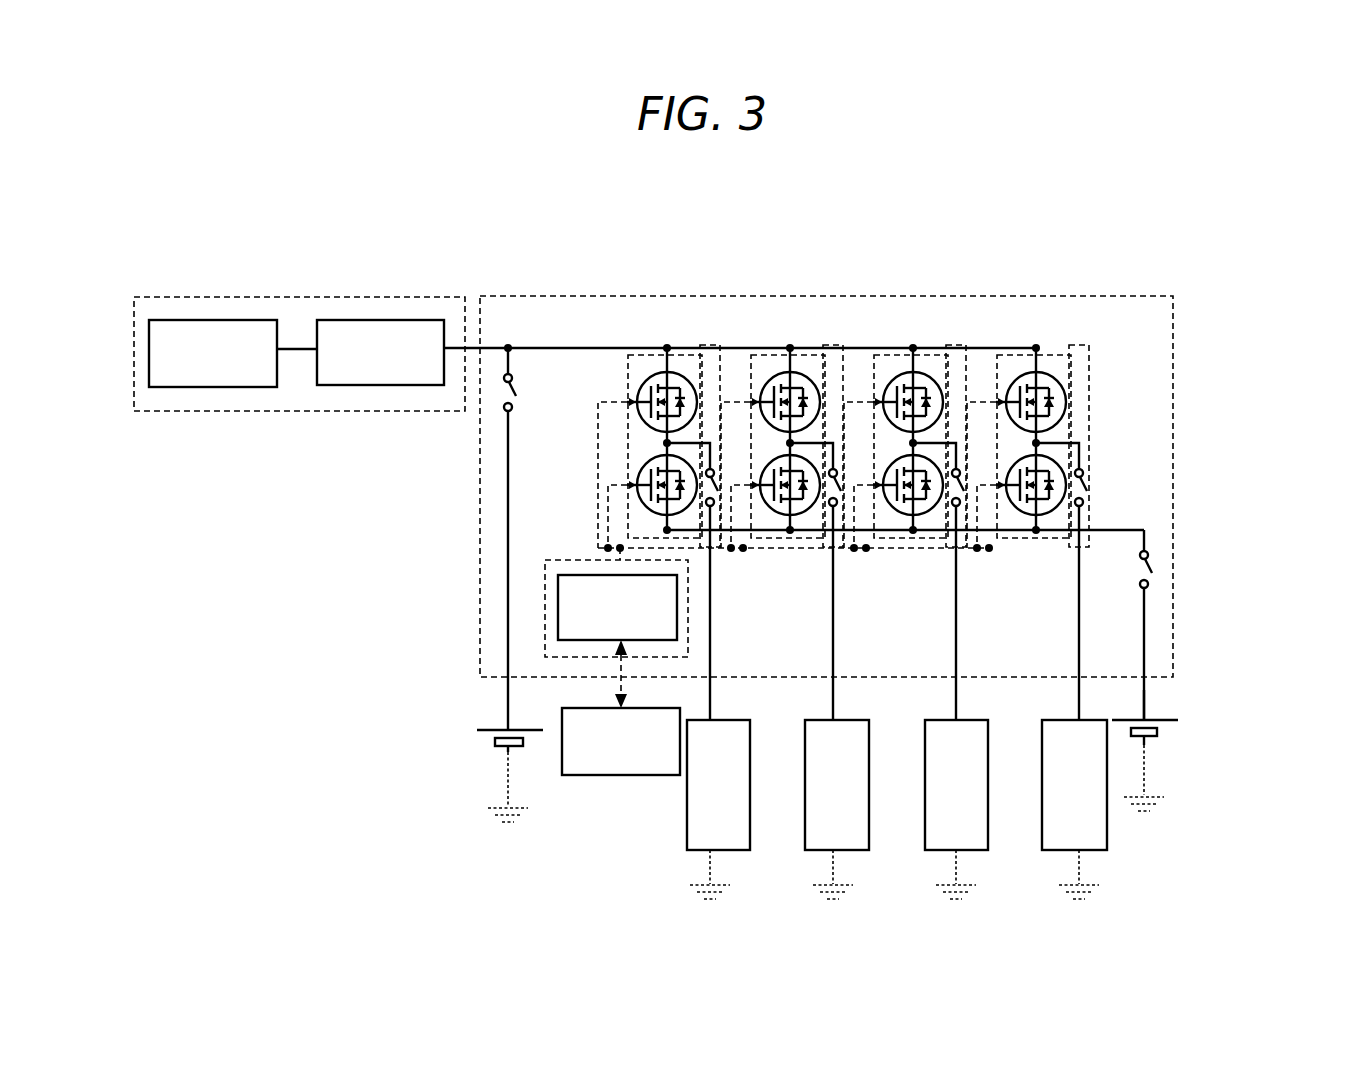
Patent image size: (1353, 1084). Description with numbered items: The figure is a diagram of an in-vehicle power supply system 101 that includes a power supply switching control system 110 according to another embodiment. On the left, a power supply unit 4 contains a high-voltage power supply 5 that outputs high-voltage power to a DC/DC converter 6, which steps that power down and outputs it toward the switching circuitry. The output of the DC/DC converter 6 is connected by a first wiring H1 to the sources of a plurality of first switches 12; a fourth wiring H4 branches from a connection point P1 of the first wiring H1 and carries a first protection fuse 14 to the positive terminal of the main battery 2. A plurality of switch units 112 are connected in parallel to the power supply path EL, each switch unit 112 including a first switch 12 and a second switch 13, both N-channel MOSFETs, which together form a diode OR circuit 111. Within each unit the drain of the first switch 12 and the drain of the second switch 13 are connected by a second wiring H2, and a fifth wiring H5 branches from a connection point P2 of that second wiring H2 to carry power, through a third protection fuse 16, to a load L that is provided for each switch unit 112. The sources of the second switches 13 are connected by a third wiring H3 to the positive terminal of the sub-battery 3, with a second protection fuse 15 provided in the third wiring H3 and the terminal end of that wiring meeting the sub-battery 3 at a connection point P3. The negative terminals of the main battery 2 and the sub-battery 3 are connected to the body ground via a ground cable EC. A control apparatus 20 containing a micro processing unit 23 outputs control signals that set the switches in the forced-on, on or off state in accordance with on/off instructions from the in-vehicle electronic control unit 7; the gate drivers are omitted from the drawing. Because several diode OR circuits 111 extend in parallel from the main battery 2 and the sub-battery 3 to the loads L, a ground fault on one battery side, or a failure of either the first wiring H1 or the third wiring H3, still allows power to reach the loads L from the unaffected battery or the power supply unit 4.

The in-vehicle power supply system 101 is at (1013, 215).
The power supply unit 4 is at (258, 297).
The power supply 5 is at (200, 320).
The DC/DC converter 6 is at (380, 318).
The first wiring H1 is at (600, 348).
The power supply path EL is at (1075, 325).
The connection point P1 is at (505, 345).
The first protection fuse 14 is at (505, 393).
The fourth wiring H4 is at (508, 610).
The main battery 2 is at (487, 740).
The ground cable EC is at (503, 768).
The power supply switching control system 110 is at (891, 362).
The diode OR circuit 111 is at (889, 377).
The switch unit 112 is at (952, 397).
The first switch 12 is at (1114, 378).
The second switch 13 is at (1114, 452).
The third protection fuse 16 is at (1137, 451).
The second wiring H2 is at (667, 443).
The connection point P2 is at (1060, 442).
The third wiring H3 is at (1146, 608).
The second protection fuse 15 is at (1150, 573).
The connection point P3 is at (1147, 718).
The sub-battery 3 is at (1167, 730).
The control apparatus 20 is at (541, 630).
The micro processing unit 23 is at (557, 626).
The in-vehicle electronic control unit 7 is at (620, 777).
The fifth wiring H5 is at (833, 688).
The load L is at (750, 820).